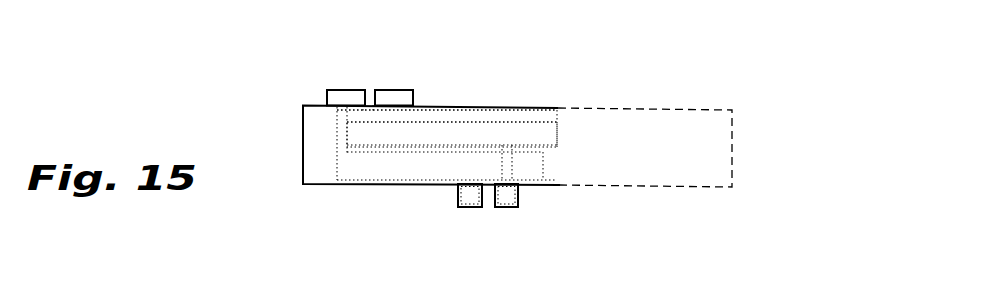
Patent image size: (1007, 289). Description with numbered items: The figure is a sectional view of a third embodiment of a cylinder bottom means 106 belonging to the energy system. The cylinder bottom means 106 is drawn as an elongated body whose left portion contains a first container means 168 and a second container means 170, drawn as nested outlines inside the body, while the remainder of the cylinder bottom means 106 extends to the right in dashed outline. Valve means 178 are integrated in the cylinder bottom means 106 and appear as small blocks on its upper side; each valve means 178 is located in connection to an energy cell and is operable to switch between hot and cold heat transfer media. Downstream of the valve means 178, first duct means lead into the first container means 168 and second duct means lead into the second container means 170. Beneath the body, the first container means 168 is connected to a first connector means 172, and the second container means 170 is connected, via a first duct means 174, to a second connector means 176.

The cylinder bottom means 106 is at (732, 150).
The first container means 168 is at (360, 165).
The second container means 170 is at (548, 132).
The first connector means 172 is at (472, 207).
The first duct means 174 is at (507, 162).
The second connector means 176 is at (512, 208).
The valve means 178 is at (397, 90).